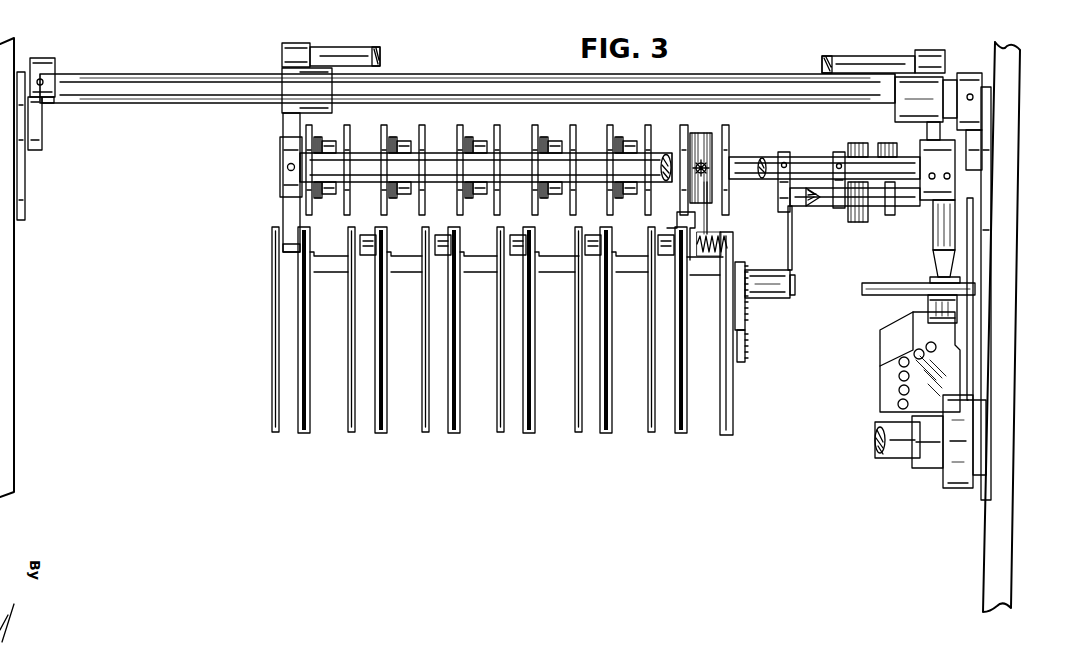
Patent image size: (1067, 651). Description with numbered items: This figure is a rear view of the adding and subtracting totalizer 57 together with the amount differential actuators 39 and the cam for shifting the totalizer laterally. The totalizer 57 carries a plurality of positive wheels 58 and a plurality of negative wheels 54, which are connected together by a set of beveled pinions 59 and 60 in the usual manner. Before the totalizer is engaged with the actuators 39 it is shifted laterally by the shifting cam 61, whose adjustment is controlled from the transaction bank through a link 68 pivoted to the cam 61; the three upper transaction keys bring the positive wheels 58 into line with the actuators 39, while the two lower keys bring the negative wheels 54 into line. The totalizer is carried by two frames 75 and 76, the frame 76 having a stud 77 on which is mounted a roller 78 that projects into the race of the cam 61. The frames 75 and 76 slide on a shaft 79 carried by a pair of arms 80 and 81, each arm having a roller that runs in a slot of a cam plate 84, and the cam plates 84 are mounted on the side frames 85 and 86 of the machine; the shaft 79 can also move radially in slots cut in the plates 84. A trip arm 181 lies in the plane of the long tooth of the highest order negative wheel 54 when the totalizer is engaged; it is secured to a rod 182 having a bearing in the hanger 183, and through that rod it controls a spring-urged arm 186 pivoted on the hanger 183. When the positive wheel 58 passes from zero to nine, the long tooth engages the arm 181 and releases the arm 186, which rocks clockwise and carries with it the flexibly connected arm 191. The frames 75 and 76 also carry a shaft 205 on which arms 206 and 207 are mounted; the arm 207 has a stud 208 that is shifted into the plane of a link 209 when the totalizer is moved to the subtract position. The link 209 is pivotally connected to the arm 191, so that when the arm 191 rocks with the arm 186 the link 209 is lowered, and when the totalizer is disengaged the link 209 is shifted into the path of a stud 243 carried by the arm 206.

The actuator 39 is at (302, 433).
The negative wheel 54 is at (683, 138).
The totalizer 57 is at (434, 152).
The positive wheel 58 is at (729, 143).
The beveled pinion 59 is at (698, 140).
The beveled pinion 60 is at (690, 214).
The shifting cam 61 is at (880, 378).
The link 68 is at (973, 305).
The totalizer frame 75 is at (283, 122).
The totalizer frame 76 is at (944, 74).
The stud 77 is at (933, 267).
The roller 78 is at (926, 310).
The shaft 79 is at (508, 76).
The arm 80 is at (41, 135).
The arm 81 is at (980, 130).
The cam plate 84 is at (22, 178).
The side frame 85 is at (1014, 233).
The side frame 86 is at (14, 242).
The trip arm 181 is at (676, 226).
The rod 182 is at (722, 241).
The hanger 183 is at (733, 383).
The arm 186 is at (745, 317).
The arm 191 is at (746, 343).
The shaft 205 is at (787, 157).
The arm 206 is at (838, 151).
The arm 207 is at (780, 200).
The stud 208 is at (802, 207).
The link 209 is at (795, 257).
The stud 243 is at (828, 208).